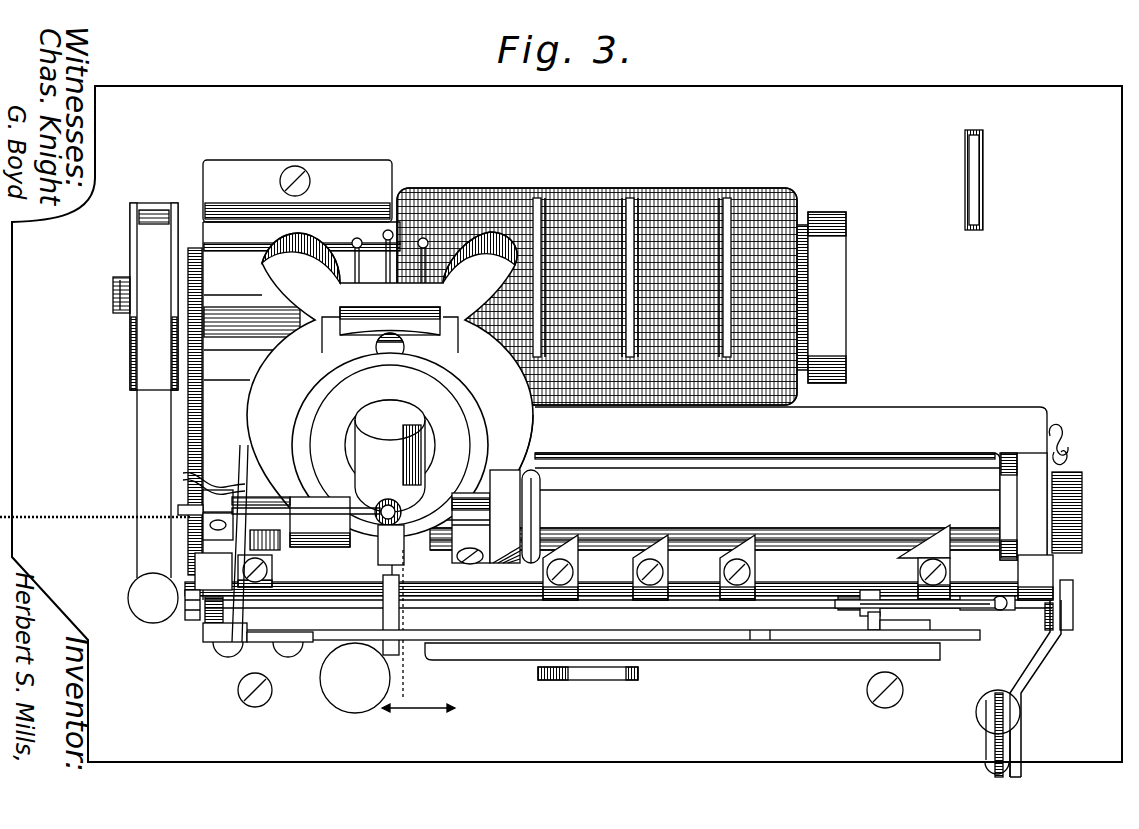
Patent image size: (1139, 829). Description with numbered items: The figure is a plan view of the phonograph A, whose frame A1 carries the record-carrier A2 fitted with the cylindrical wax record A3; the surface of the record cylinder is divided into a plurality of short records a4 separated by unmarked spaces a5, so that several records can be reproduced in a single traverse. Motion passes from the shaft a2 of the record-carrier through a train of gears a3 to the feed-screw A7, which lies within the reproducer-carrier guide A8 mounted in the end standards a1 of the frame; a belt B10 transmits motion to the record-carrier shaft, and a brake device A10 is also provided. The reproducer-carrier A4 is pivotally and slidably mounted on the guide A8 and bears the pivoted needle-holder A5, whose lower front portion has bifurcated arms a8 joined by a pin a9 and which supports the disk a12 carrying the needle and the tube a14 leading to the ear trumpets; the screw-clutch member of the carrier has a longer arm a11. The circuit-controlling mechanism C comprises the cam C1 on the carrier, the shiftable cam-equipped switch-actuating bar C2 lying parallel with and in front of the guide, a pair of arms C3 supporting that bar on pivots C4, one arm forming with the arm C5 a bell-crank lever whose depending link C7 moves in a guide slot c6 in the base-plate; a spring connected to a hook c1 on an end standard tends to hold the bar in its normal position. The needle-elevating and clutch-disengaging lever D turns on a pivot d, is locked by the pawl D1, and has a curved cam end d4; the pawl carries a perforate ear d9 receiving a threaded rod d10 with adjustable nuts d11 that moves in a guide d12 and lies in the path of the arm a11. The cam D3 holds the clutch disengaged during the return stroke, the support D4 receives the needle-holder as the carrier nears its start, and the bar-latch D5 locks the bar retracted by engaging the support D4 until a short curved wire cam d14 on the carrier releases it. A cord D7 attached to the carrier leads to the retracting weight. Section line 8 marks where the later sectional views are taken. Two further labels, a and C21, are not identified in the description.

The phonograph A is at (318, 355).
The frame A1 is at (983, 398).
The record-carrier A2 is at (850, 268).
The cylindrical record A3 is at (690, 192).
The reproducer-carrier A4 is at (512, 438).
The needle-holder A5 is at (300, 383).
The reproducer-carrier feed-screw A7 is at (180, 507).
The reproducer-carrier guide A8 is at (870, 596).
The brake device A10 is at (538, 676).
The body a is at (243, 296).
The standards a1 is at (1018, 490).
The shaft of the record-carrier a2 is at (113, 295).
The train of gears a3 is at (188, 396).
The records a4 is at (484, 188).
The unmarked spaces a5 is at (538, 188).
The bifurcations a8 is at (400, 565).
The pin a9 is at (383, 575).
The longer arm a11 is at (355, 678).
The disk a12 is at (390, 422).
The tube a14 is at (403, 490).
The belt B10 is at (131, 413).
The circuit-controlling mechanism C is at (1082, 498).
The cam C1 is at (515, 516).
The cam-equipped switch-actuating bar C2 is at (510, 565).
The arms C3 is at (595, 548).
The pivots C4 is at (945, 540).
The arm C5 is at (563, 537).
The switch-actuating link C7 is at (990, 722).
The pin C21 is at (984, 188).
The hook c1 is at (1066, 438).
The guide slot c6 is at (1020, 712).
The needle-elevating and clutch-disengaging lever D is at (688, 630).
The latch or pawl D1 is at (903, 690).
The cam D3 is at (752, 660).
The needle-holder support D4 is at (343, 517).
The bar-latch D5 is at (240, 540).
The cord D7 is at (72, 522).
The pivot d is at (900, 634).
The cam portion d4 is at (269, 690).
The perforate ear d9 is at (855, 612).
The threaded rod d10 is at (873, 630).
The adjustable nuts d11 is at (882, 590).
The guide d12 is at (975, 620).
The cam d14 is at (215, 473).
The section line 8 is at (418, 725).